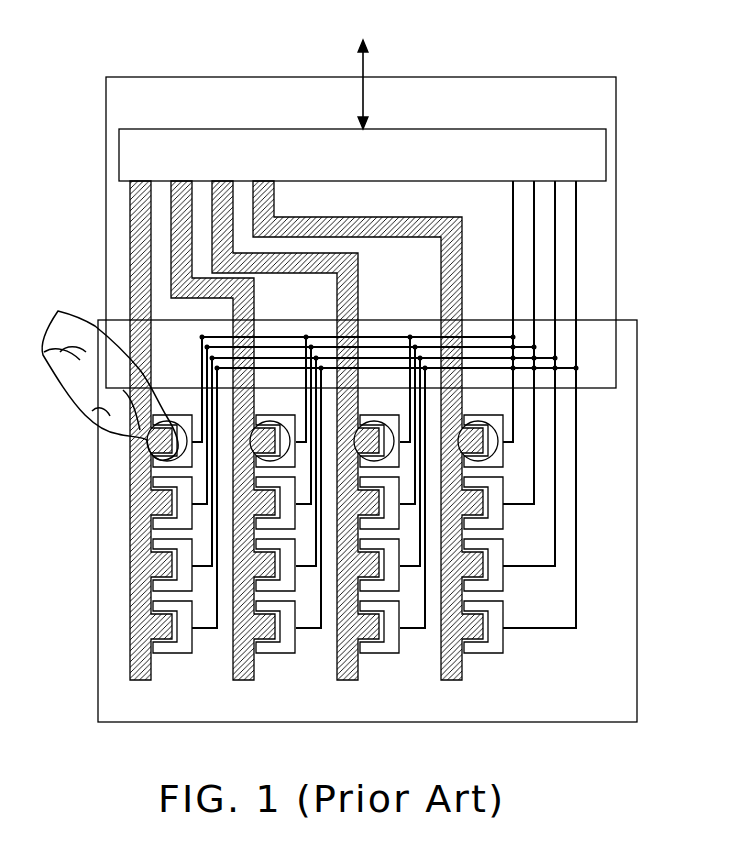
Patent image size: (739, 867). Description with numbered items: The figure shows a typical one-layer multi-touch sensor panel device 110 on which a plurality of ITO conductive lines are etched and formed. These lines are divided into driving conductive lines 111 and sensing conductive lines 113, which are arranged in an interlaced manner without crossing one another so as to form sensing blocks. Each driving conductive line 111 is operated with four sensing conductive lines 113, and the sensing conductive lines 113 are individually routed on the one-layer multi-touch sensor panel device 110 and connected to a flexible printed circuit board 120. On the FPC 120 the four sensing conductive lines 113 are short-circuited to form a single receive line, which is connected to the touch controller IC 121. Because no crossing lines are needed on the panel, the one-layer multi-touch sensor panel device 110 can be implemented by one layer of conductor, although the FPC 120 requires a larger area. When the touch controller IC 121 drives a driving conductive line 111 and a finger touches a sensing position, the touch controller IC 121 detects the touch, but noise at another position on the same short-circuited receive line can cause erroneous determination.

The one-layer multi-touch sensor panel device 110 is at (371, 722).
The driving conductive lines 111 is at (141, 680).
The sensing conductive lines 113 is at (190, 420).
The flexible printed circuit board (FPC) 120 is at (432, 77).
The touch controller IC 121 is at (310, 128).